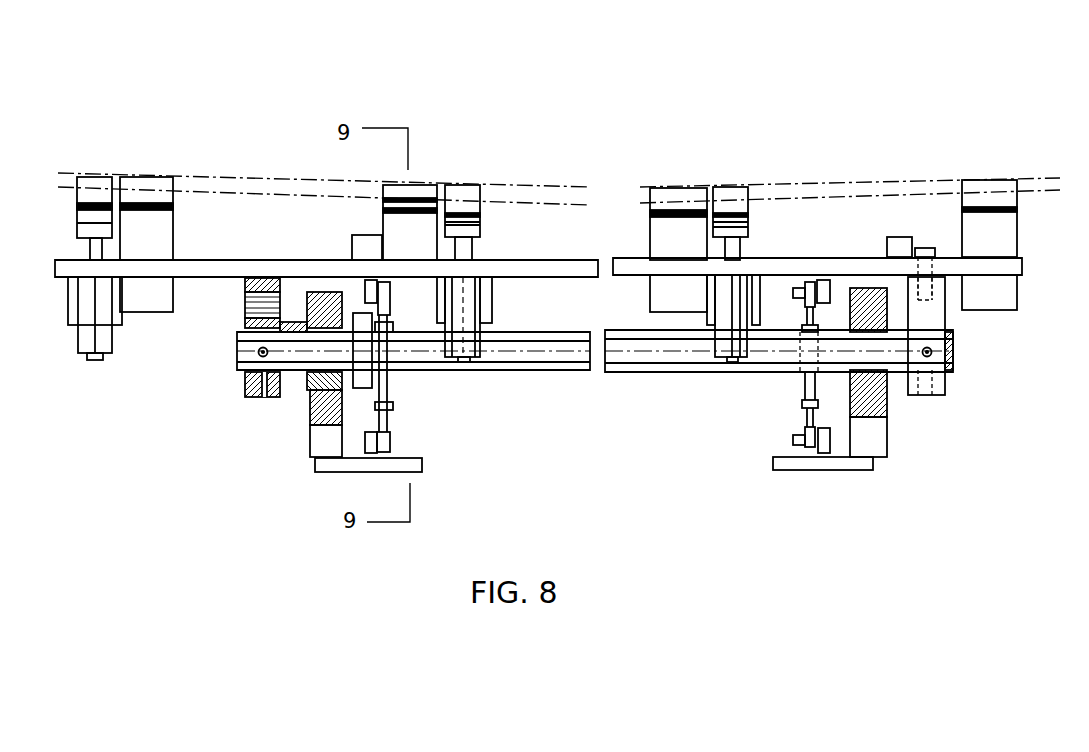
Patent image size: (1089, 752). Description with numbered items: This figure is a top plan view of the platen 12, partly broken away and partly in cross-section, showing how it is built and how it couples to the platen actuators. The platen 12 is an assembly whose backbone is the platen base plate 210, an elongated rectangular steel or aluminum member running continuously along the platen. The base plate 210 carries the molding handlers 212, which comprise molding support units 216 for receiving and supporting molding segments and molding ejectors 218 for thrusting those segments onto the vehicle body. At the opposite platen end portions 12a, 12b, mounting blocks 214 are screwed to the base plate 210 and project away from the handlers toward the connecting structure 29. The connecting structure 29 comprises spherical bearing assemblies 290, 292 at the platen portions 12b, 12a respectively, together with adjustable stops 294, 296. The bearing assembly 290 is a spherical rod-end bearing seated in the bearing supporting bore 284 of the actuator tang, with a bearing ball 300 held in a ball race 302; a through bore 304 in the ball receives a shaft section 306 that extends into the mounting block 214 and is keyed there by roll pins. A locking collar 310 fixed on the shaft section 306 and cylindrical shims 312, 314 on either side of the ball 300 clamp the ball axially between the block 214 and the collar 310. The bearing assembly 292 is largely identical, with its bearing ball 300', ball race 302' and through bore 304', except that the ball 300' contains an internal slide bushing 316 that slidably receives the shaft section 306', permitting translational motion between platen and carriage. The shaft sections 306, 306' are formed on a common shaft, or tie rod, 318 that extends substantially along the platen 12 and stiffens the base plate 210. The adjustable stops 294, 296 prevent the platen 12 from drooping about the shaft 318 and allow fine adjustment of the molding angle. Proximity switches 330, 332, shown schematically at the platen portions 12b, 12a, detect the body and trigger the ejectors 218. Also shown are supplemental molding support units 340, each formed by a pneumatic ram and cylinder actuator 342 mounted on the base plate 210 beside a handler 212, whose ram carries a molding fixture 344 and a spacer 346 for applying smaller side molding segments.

The platen 12 is at (163, 150).
The platen end portion 12a is at (875, 262).
The platen end portion 12b is at (215, 258).
The connecting structure 29 is at (243, 373).
The platen base plate 210 is at (490, 255).
The molding handlers 212 is at (1012, 175).
The mounting blocks 214 is at (245, 310).
The molding support units 216 is at (180, 232).
The molding ejectors 218 is at (133, 330).
The bearing supporting bore 284 is at (890, 398).
The spherical bearing assembly 290 is at (268, 408).
The spherical bearing assembly 292 is at (940, 398).
The adjustable stop 294 is at (395, 408).
The adjustable stop 296 is at (793, 398).
The bearing ball 300 is at (567, 369).
The bearing ball 300' is at (843, 440).
The ball race 302 is at (335, 434).
The ball race 302' is at (872, 446).
The through bore 304 is at (416, 359).
The through bore 304' is at (763, 389).
The shaft section 306 is at (375, 351).
The shaft section 306' is at (823, 366).
The locking collar 310 is at (357, 317).
The cylindrical shim 312 is at (245, 295).
The cylindrical shim 314 is at (393, 335).
The internal slide bushing 316 is at (847, 340).
The common shaft (tie rod) 318 is at (520, 270).
The proximity switch 330 is at (372, 240).
The proximity switch 332 is at (908, 238).
The supplemental molding support unit 340 is at (482, 265).
The pneumatic ram and cylinder actuator 342 is at (468, 330).
The molding fixture 344 is at (463, 185).
The spacer 346 is at (480, 218).